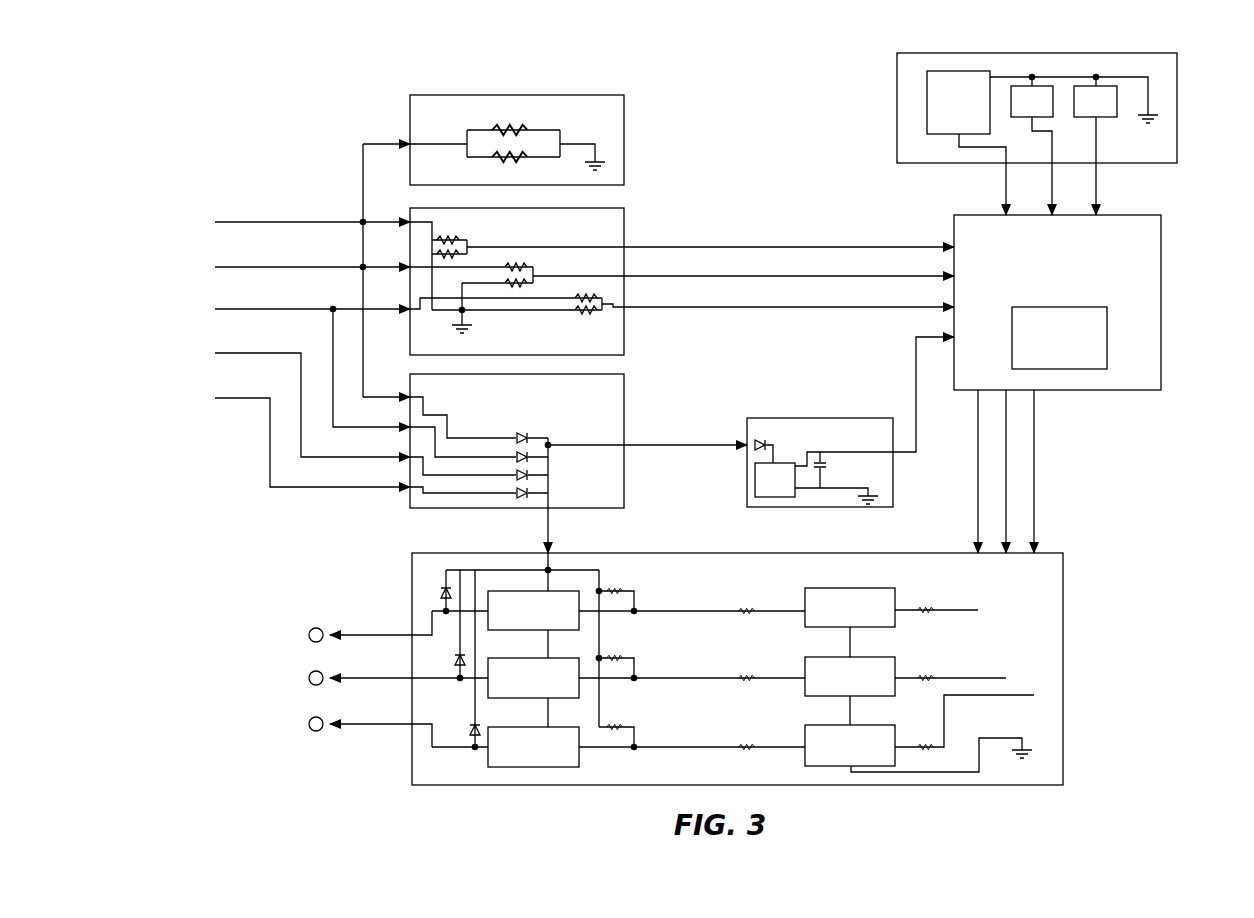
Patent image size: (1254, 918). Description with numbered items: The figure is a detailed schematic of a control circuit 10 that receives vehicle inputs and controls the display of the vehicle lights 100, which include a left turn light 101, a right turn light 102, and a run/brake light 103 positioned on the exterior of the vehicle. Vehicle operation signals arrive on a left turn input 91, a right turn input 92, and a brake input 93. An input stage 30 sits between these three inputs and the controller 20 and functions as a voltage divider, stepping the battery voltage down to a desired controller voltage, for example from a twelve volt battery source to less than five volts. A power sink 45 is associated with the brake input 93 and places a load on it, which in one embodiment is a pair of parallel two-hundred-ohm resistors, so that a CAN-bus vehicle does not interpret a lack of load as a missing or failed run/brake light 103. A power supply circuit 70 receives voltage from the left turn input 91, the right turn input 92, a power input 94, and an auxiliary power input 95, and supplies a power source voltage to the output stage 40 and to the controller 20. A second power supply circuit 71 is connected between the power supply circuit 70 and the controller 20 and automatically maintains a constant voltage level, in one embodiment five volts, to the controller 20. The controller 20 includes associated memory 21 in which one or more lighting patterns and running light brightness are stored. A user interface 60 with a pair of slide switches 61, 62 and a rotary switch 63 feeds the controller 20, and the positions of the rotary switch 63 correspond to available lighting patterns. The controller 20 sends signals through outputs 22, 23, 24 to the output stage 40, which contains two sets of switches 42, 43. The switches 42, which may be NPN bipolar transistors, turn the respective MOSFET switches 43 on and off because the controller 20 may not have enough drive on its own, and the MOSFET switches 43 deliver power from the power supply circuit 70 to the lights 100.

The control circuit 10 is at (763, 122).
The controller 20 is at (1162, 270).
The memory 21 is at (1059, 338).
The output 22 is at (978, 488).
The output 23 is at (1006, 462).
The output 24 is at (1034, 485).
The input stage 30 is at (624, 232).
The output stage 40 is at (1063, 583).
The switches 42 is at (850, 677).
The MOSFET switches 43 is at (533, 679).
The power sink 45 is at (624, 135).
The user interface 60 is at (1177, 85).
The slide switch 61 is at (1032, 150).
The slide switch 62 is at (1095, 150).
The rotary switch 63 is at (966, 143).
The power supply circuit 70 is at (624, 400).
The second power supply circuit 71 is at (838, 418).
The left turn input 91 is at (270, 266).
The right turn input 92 is at (270, 309).
The brake input 93 is at (270, 222).
The power input 94 is at (270, 353).
The auxiliary power input 95 is at (255, 398).
The vehicle lights 100 is at (237, 583).
The left turn light 101 is at (316, 671).
The right turn light 102 is at (316, 717).
The run/brake light 103 is at (316, 628).